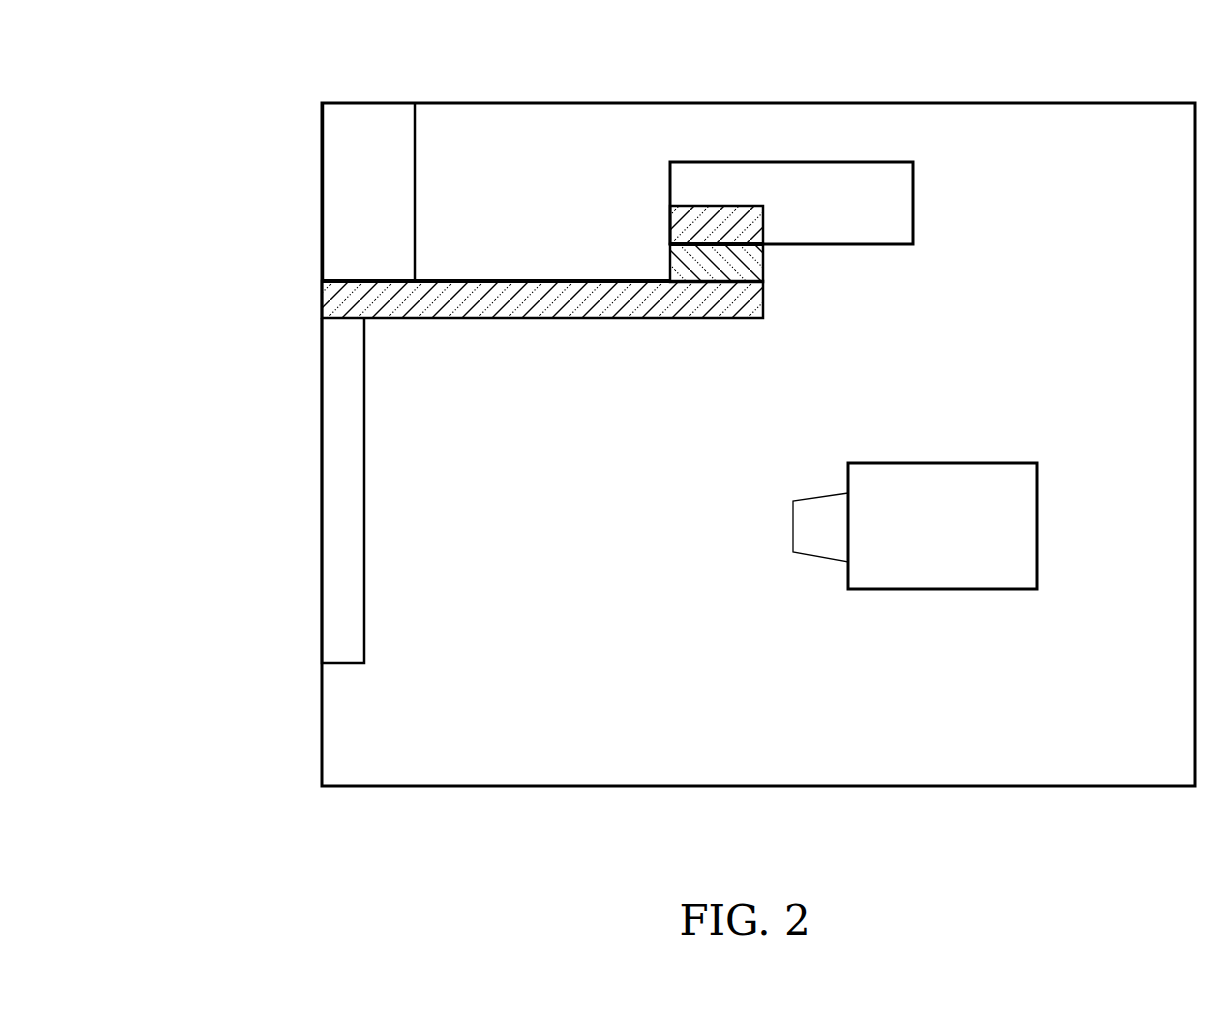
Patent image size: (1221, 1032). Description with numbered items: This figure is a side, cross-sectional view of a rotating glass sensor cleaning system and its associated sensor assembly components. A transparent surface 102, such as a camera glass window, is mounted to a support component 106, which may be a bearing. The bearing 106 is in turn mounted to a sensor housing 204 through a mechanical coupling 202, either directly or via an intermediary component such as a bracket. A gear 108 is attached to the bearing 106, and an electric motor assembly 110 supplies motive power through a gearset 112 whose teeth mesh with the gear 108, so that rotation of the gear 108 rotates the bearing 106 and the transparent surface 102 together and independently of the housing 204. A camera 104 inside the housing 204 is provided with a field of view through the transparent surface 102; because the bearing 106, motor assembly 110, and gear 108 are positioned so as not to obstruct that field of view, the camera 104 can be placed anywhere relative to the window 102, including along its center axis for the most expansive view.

The sensor housing 204 is at (758, 400).
The mechanical coupling 202 is at (267, 191).
The support component 106 is at (542, 349).
The transparent surface 102 is at (236, 490).
The electric motor assembly 110 is at (881, 181).
The gearset 112 is at (636, 195).
The gear 108 is at (657, 243).
The camera 104 is at (954, 484).